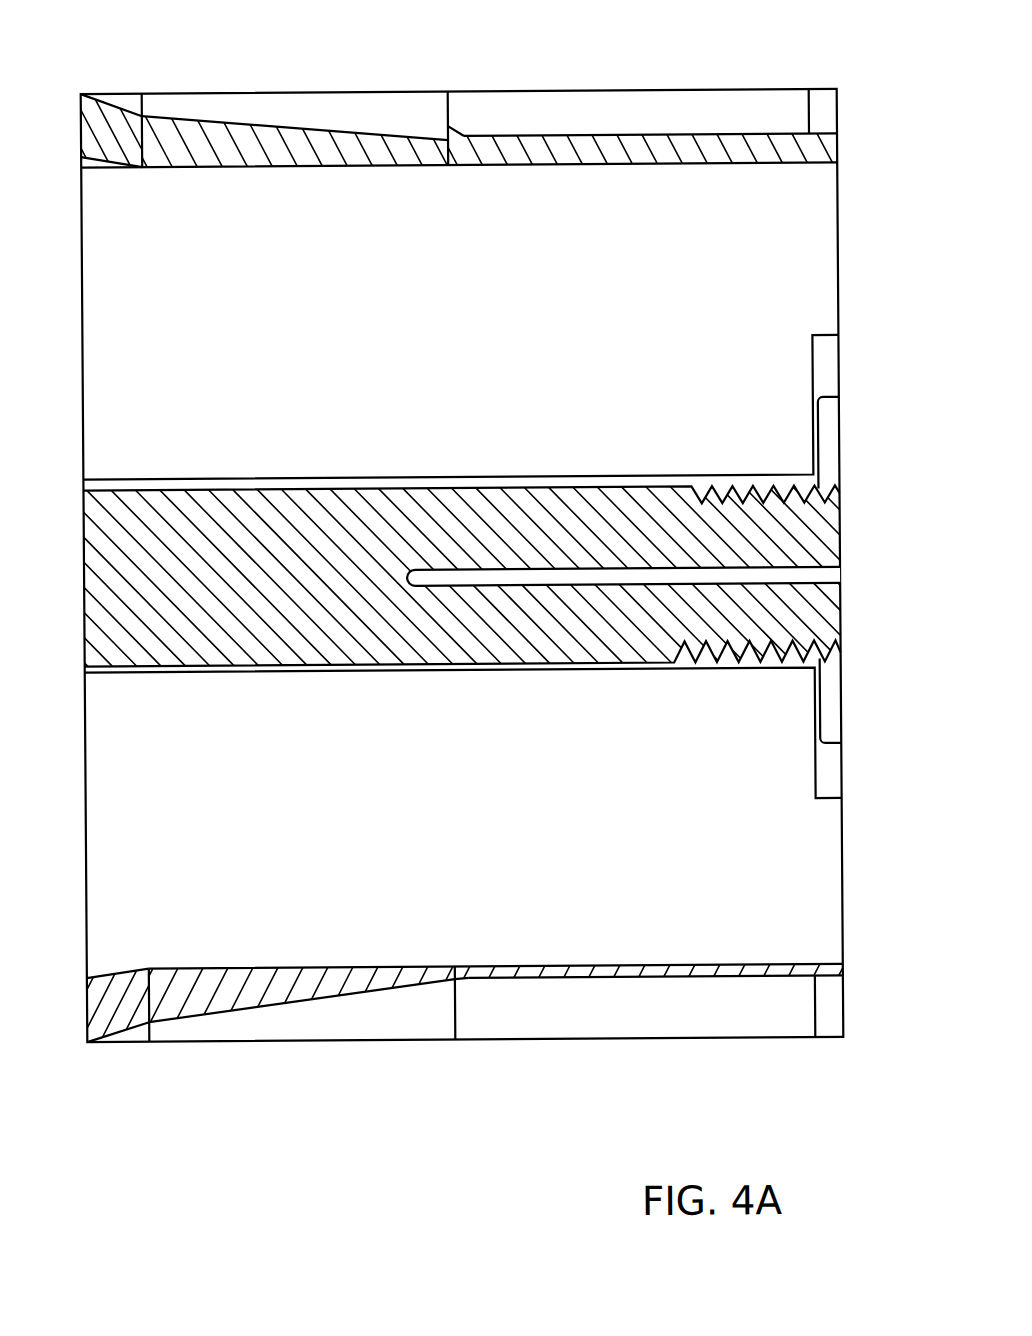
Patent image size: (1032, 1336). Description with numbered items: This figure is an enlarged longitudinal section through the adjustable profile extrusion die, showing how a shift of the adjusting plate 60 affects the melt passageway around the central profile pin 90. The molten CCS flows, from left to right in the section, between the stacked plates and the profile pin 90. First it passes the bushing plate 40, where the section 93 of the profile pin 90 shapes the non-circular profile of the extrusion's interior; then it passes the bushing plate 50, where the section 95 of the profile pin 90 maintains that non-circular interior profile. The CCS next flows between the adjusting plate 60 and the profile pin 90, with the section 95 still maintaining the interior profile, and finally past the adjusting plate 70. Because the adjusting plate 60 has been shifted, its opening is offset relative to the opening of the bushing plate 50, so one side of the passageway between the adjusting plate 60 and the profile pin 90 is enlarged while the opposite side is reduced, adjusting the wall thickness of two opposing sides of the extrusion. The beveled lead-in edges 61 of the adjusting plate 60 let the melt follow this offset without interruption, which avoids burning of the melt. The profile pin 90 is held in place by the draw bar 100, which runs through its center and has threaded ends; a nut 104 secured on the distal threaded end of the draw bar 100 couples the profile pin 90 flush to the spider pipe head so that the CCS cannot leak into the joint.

The bushing plate 40 is at (120, 101).
The bushing plate 50 is at (393, 124).
The adjusting plate 60 is at (661, 126).
The lead-in edges 61 is at (461, 130).
The adjusting plate 70 is at (823, 102).
The profile pin 90 is at (664, 384).
The section of profile pin 93 is at (126, 163).
The section of profile pin 95 is at (358, 166).
The draw bar 100 is at (113, 608).
The nut 104 is at (833, 450).